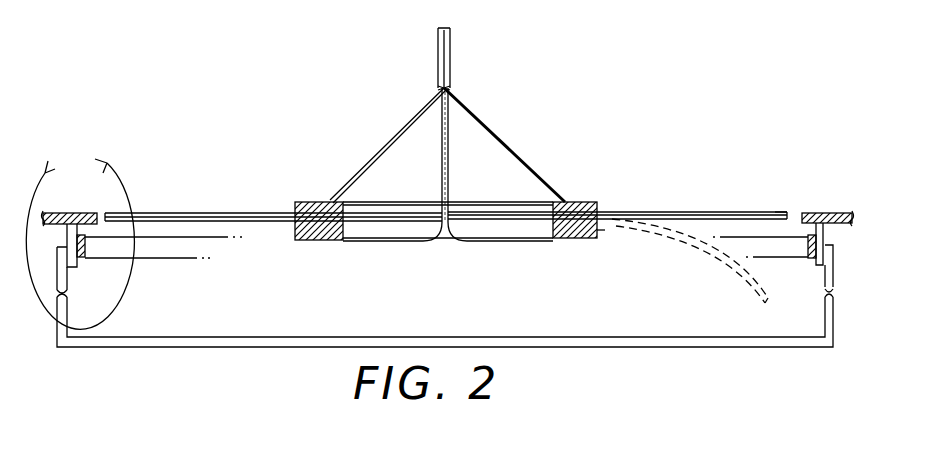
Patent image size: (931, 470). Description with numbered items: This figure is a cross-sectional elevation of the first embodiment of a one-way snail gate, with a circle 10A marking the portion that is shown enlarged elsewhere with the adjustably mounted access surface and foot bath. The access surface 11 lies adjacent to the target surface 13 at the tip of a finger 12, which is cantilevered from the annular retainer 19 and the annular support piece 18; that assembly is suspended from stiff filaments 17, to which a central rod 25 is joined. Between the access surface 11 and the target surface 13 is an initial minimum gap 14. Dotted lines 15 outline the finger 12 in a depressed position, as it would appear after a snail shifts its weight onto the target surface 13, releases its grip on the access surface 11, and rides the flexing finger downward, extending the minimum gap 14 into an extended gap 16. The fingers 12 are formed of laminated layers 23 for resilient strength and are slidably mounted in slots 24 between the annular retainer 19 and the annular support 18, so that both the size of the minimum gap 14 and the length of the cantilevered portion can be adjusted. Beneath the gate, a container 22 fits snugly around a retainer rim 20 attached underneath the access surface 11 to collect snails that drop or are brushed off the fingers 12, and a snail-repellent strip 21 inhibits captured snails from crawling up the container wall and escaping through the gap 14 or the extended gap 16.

The detail portion of hinge region 10A is at (80, 234).
The access surface 11 is at (818, 212).
The finger 12 is at (681, 210).
The target surface 13 is at (775, 211).
The initial minimum gap 14 is at (793, 214).
The dotted lines 15 is at (697, 252).
The extended gap 16 is at (803, 254).
The stiff filaments 17 is at (386, 145).
The annular support piece 18 is at (600, 231).
The annular retainer 19 is at (572, 201).
The retainer rim 20 is at (829, 240).
The snail-repellent strip 21 is at (86, 251).
The container 22 is at (103, 347).
The laminated layers 23 is at (178, 213).
The slots 24 is at (303, 203).
The lifting rod 25 is at (450, 54).